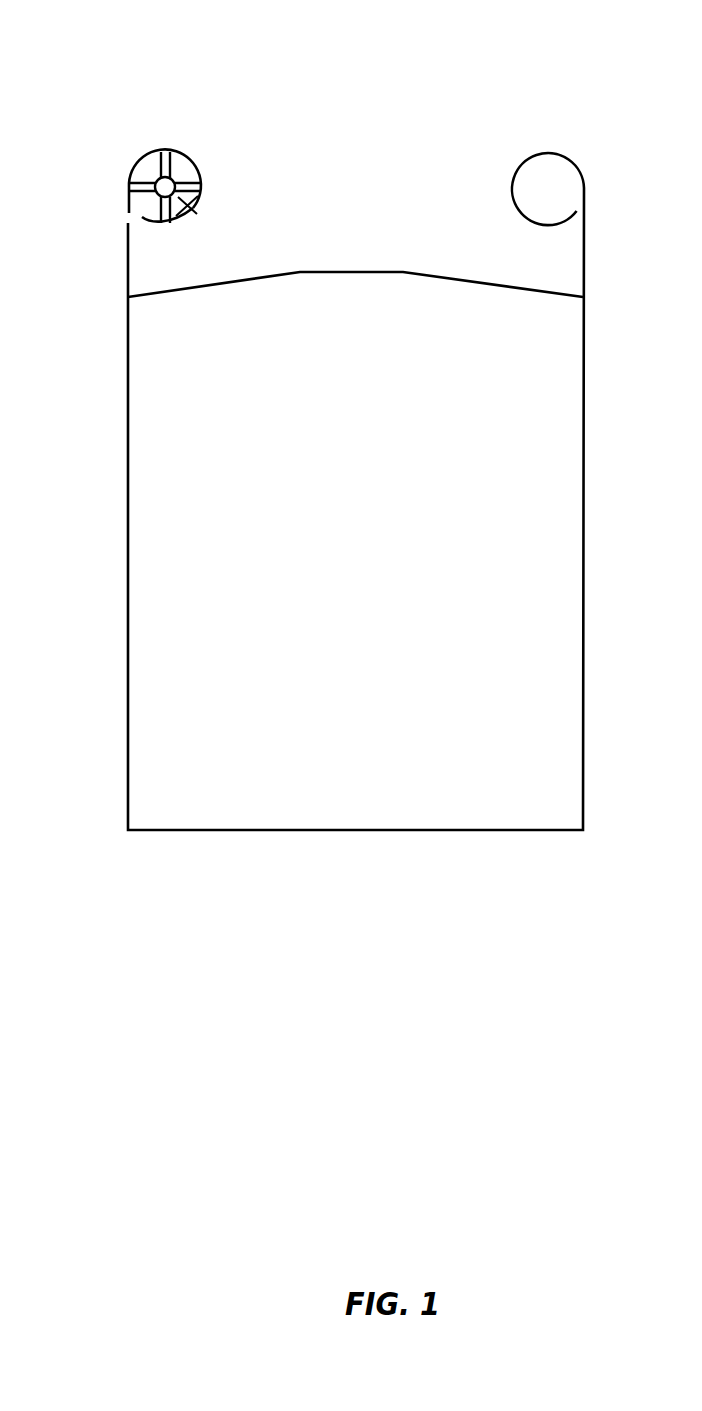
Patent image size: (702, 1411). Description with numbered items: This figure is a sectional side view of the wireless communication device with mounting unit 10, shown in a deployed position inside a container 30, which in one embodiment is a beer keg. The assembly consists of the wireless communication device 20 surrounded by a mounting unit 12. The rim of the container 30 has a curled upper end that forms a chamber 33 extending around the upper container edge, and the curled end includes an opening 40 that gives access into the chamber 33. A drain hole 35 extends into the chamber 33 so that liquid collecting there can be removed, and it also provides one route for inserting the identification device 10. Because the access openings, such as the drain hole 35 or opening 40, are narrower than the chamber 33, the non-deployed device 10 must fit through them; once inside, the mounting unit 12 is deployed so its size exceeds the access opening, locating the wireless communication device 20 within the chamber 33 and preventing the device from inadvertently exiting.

The wireless communication device with mounting unit 10 is at (118, 153).
The mounting unit 12 is at (182, 222).
The wireless communication device 20 is at (180, 168).
The container 30 is at (126, 606).
The chamber 33 is at (148, 170).
The drain hole 35 is at (122, 220).
The opening 40 is at (139, 220).